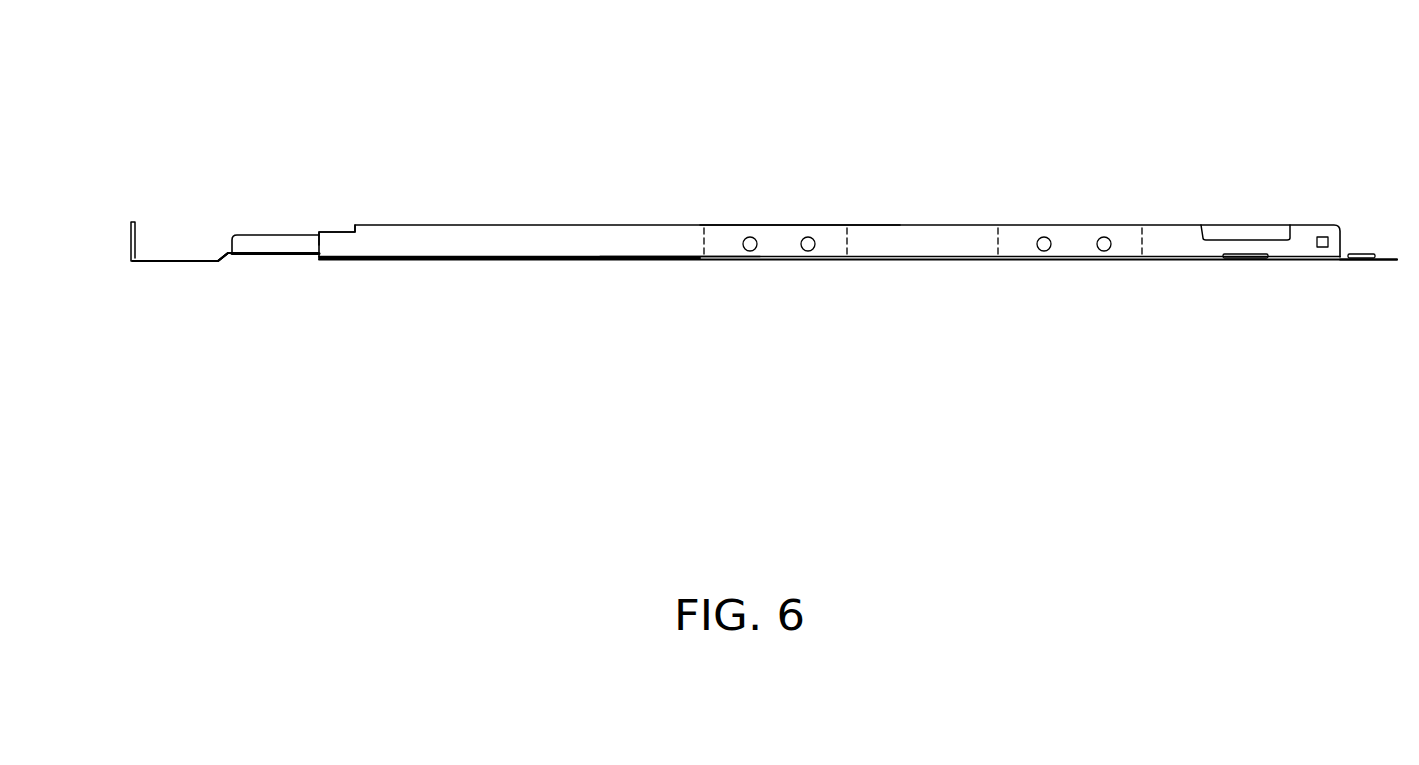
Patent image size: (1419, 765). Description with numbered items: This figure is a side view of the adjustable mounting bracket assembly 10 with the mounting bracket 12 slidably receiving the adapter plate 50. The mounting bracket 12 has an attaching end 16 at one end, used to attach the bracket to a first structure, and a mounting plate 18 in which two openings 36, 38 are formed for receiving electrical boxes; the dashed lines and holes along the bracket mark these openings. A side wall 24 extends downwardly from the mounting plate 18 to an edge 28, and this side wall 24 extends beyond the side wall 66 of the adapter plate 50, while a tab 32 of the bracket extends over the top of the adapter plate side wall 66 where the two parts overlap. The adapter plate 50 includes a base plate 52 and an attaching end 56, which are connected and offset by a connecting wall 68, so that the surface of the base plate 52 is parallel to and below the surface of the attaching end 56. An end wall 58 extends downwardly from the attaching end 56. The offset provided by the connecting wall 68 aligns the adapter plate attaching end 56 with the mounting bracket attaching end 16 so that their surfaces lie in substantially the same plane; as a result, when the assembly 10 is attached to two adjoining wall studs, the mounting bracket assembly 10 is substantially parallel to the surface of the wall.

The adjustable mounting bracket assembly 10 is at (893, 171).
The mounting bracket 12 is at (1001, 299).
The attaching end 16 is at (1390, 262).
The mounting plate 18 is at (380, 258).
The side wall 24 is at (660, 245).
The edge 28 is at (563, 225).
The tab 32 is at (330, 228).
The first electrical box opening 36 is at (780, 225).
The second electrical box opening 38 is at (1083, 225).
The adapter plate 50 is at (251, 310).
The base plate 52 is at (283, 255).
The attaching end 56 is at (178, 263).
The end wall 58 is at (123, 240).
The side wall 66 is at (274, 235).
The connecting wall 68 is at (218, 250).